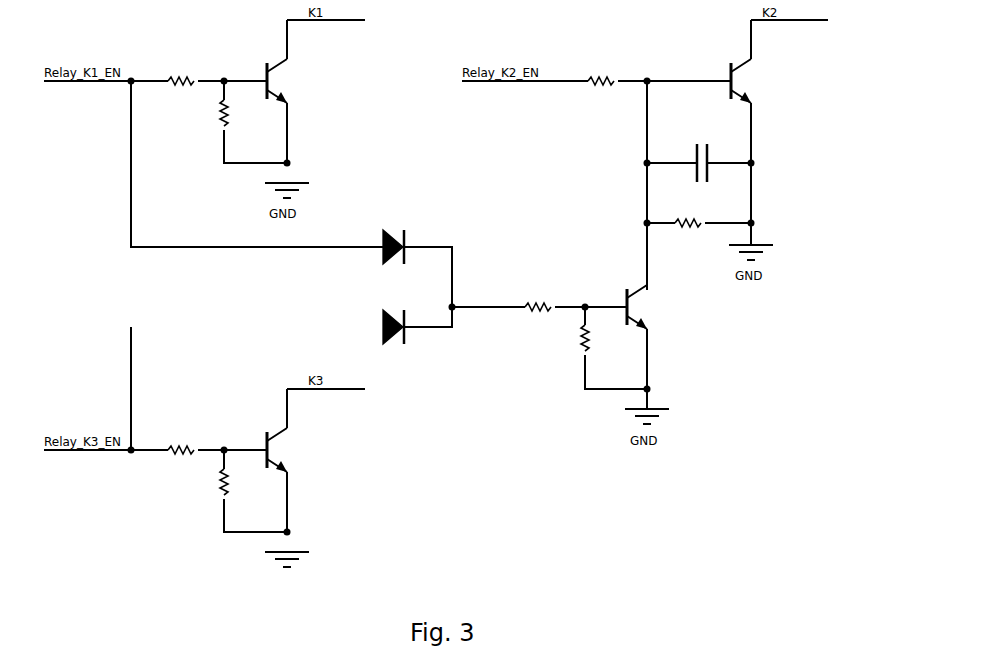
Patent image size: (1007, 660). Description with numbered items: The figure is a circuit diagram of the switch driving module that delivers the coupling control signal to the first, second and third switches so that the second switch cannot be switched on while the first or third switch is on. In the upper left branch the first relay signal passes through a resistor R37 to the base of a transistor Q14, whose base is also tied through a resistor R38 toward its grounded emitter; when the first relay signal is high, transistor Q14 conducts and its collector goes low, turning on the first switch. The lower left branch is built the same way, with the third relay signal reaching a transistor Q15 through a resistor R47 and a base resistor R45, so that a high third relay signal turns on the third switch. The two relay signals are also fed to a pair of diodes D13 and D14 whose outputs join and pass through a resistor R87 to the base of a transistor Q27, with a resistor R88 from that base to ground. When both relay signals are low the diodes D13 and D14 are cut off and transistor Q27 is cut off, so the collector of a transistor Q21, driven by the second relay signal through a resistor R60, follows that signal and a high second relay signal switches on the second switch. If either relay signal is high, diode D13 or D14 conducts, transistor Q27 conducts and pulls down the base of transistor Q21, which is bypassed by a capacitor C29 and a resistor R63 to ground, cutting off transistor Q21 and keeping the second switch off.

The resistor R37 473 R37 is at (180, 79).
The resistor R38 105 R38 is at (237, 119).
The transistor Q14 is at (303, 81).
The resistor R47 473 R47 is at (180, 454).
The resistor R45 105 R45 is at (237, 489).
The transistor Q15 CE3400 Q15 is at (303, 450).
The diode D13 is at (391, 248).
The diode D14 is at (391, 328).
The resistor R87 473 R87 is at (536, 306).
The resistor R88 105 R88 is at (597, 342).
The transistor Q27 is at (660, 307).
The resistor R60 103 R60 is at (599, 83).
The transistor Q21 is at (767, 81).
The capacitor C29 102P C29 is at (704, 165).
The resistor R63 105 R63 is at (684, 224).